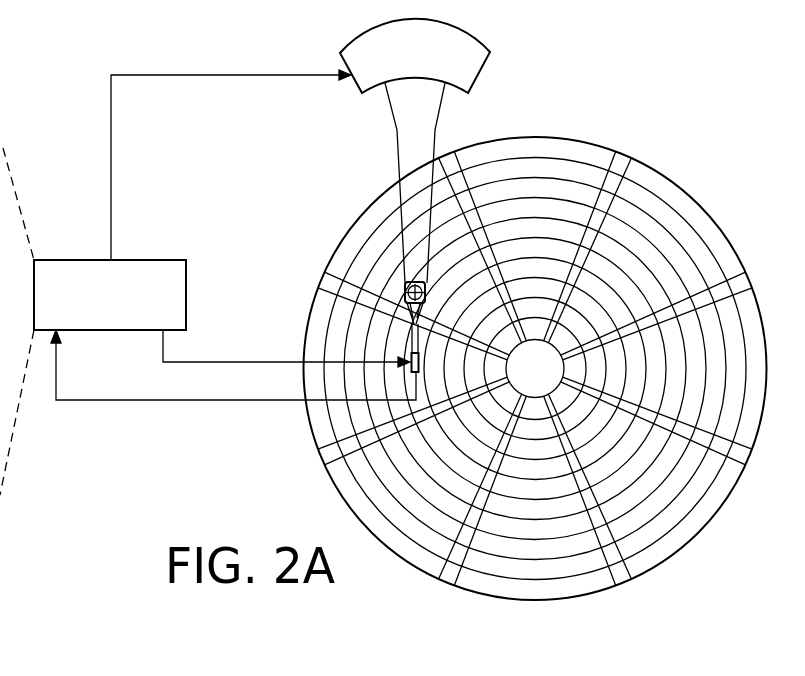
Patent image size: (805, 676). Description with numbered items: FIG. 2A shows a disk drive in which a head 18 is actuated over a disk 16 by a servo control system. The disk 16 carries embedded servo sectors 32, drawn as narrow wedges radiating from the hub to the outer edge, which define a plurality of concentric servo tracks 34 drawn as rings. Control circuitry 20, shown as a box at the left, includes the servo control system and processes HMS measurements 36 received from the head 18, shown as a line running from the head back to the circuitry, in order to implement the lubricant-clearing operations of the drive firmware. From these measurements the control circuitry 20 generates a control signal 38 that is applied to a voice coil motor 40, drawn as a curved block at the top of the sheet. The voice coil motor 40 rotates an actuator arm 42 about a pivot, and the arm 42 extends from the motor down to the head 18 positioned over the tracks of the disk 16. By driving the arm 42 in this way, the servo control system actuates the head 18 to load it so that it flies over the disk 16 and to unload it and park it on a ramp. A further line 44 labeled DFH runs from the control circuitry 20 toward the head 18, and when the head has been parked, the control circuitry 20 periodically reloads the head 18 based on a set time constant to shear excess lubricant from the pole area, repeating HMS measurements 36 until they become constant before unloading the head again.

The disk 16 is at (690, 182).
The head 18 is at (421, 362).
The control circuitry 20 is at (148, 259).
The embedded servo sectors 32 is at (535, 373).
The servo tracks 34 is at (535, 167).
The HMS measurements 36 is at (218, 401).
The control signal 38 is at (111, 128).
The voice coil motor 40 is at (356, 89).
The actuator arm 42 is at (398, 166).
The DFH control signal 44 is at (193, 364).